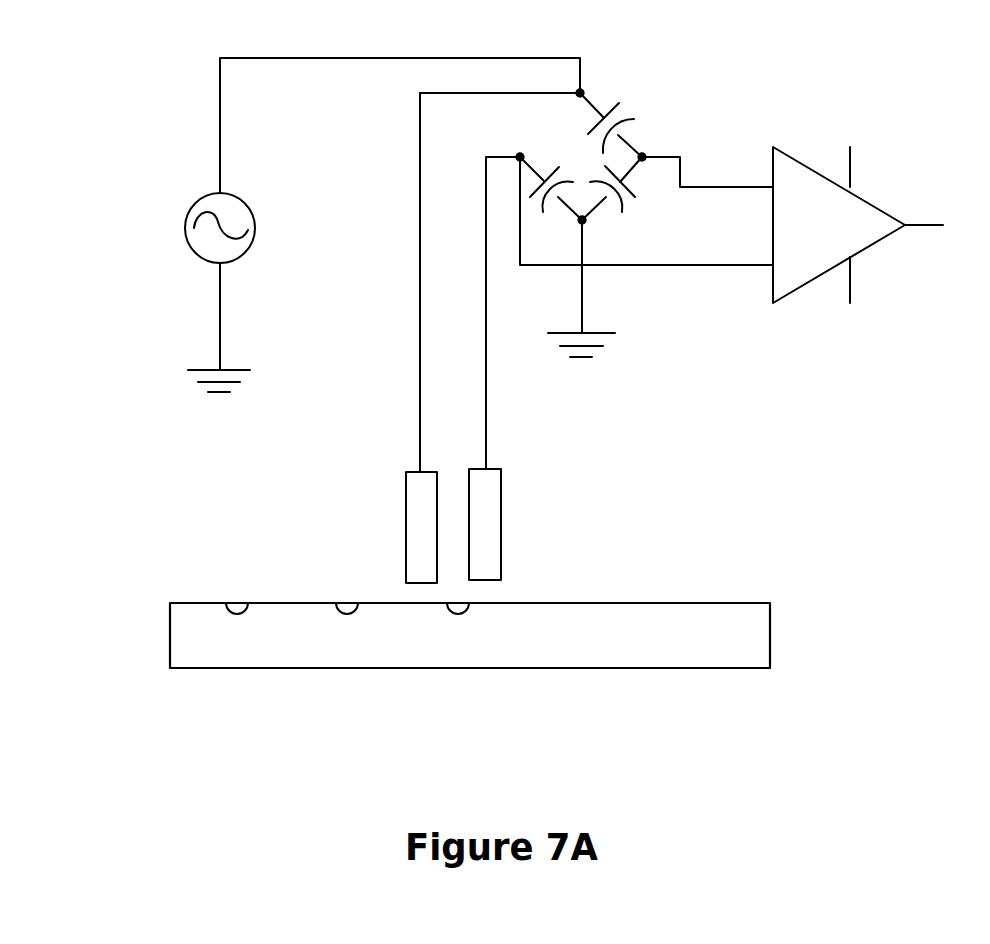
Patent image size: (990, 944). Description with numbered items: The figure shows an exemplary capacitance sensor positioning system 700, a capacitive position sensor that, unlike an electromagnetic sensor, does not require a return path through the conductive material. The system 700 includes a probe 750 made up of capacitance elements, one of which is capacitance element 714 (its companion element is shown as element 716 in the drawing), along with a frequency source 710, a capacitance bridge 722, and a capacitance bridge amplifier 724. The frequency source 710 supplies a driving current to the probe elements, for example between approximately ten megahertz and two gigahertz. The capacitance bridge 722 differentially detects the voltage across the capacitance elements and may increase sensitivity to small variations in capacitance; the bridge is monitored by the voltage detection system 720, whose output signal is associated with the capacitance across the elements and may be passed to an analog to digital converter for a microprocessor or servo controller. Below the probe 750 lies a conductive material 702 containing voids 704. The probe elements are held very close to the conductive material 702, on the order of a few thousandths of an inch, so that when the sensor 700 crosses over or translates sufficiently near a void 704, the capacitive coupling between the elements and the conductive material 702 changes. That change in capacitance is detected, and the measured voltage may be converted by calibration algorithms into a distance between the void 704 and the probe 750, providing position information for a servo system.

The capacitance sensor positioning system 700 is at (177, 130).
The conductive material 702 is at (138, 637).
The void 704 is at (238, 603).
The frequency source 710 is at (200, 238).
The capacitance element 714 is at (483, 498).
The drive electrode 716 is at (418, 498).
The voltage detection system 720 is at (822, 138).
The capacitance bridge 722 is at (652, 113).
The capacitance bridge amplifier 724 is at (803, 242).
The probe 750 is at (524, 458).